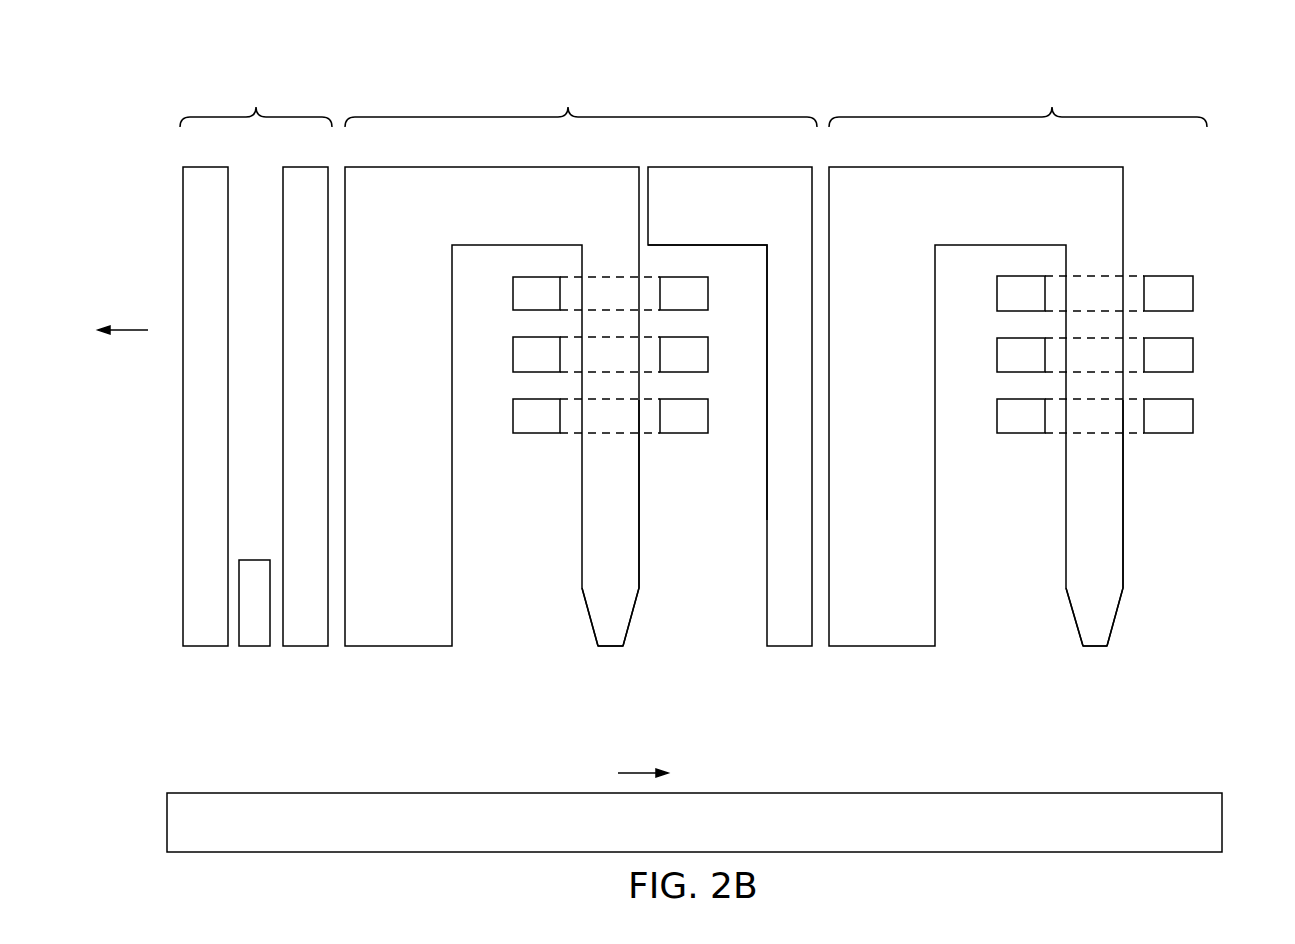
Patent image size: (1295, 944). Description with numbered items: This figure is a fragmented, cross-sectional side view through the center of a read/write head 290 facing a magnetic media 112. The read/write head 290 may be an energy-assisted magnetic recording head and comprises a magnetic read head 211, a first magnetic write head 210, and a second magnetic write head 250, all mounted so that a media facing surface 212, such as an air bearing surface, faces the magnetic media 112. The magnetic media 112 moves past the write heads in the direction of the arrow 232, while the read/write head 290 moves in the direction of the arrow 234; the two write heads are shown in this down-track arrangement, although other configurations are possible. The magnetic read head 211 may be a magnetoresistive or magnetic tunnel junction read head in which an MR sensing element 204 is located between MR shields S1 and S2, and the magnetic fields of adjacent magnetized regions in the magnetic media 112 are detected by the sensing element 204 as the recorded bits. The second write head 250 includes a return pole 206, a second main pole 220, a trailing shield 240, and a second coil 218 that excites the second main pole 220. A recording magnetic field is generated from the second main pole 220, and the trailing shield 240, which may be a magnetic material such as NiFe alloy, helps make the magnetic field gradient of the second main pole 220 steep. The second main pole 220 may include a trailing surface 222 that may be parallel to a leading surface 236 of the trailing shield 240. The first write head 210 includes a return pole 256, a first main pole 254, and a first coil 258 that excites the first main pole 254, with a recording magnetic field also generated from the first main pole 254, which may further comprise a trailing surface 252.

The read/write head 290 is at (144, 50).
The magnetic read head 211 is at (256, 100).
The second magnetic write head 250 is at (581, 100).
The first magnetic write head 210 is at (1018, 100).
The arrow 234 is at (131, 328).
The MR shield S1 is at (204, 647).
The MR sensing element 204 is at (255, 647).
The MR shield S2 is at (307, 647).
The return pole 206 is at (400, 647).
The second coil 218 is at (540, 434).
The second main pole 220 is at (588, 612).
The trailing surface 222 is at (640, 578).
The media facing surface 212 is at (612, 648).
The leading surface 236 is at (767, 499).
The trailing shield 240 is at (790, 647).
The return pole 256 is at (882, 647).
The first coil 258 is at (1018, 434).
The first main pole 254 is at (1073, 612).
The trailing surface 252 is at (1124, 578).
The arrow 232 is at (633, 771).
The magnetic media 112 is at (1222, 820).